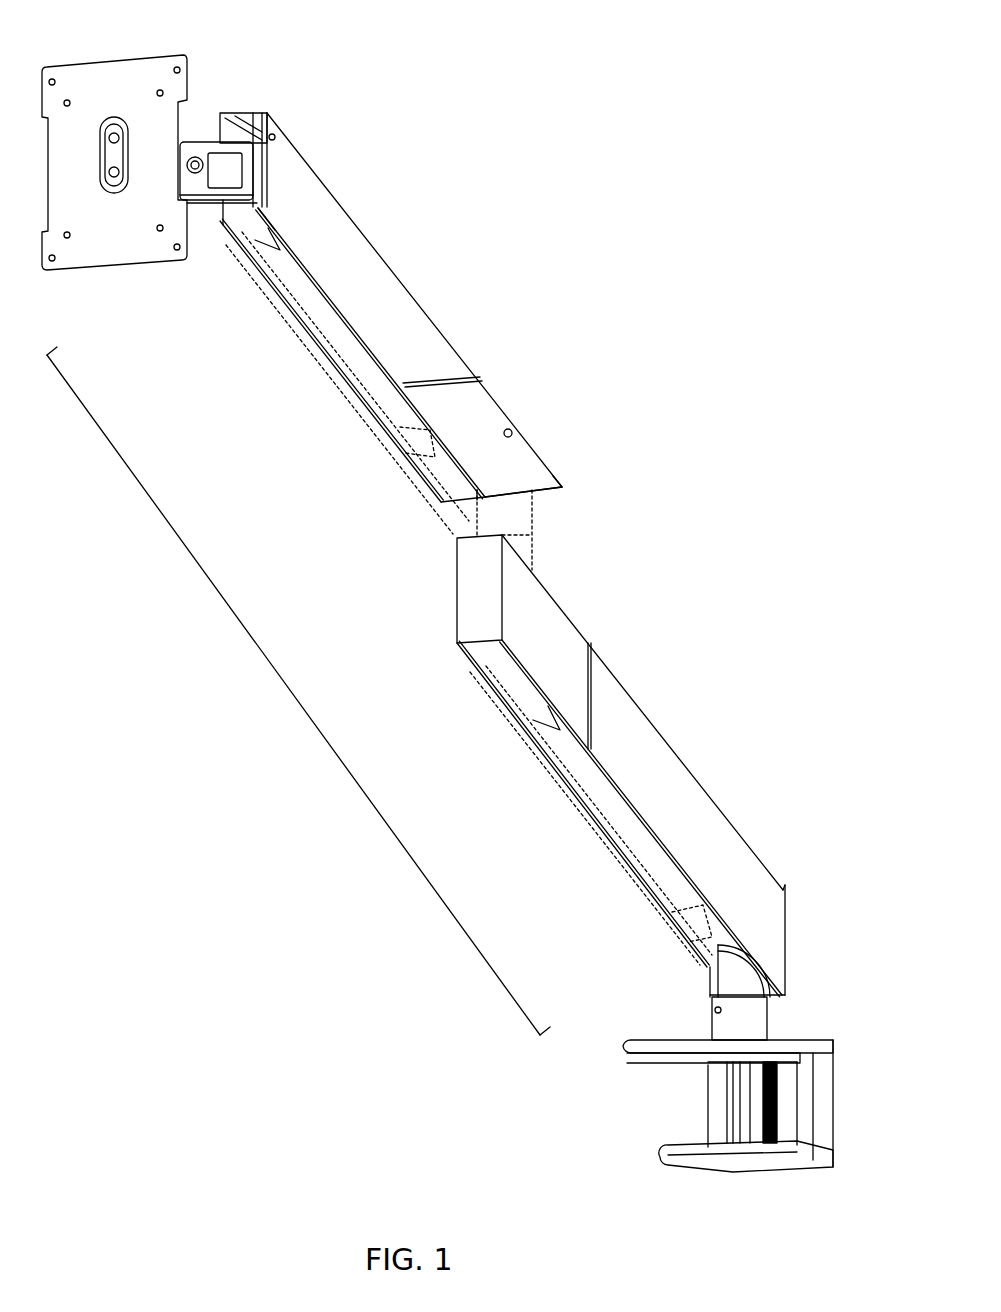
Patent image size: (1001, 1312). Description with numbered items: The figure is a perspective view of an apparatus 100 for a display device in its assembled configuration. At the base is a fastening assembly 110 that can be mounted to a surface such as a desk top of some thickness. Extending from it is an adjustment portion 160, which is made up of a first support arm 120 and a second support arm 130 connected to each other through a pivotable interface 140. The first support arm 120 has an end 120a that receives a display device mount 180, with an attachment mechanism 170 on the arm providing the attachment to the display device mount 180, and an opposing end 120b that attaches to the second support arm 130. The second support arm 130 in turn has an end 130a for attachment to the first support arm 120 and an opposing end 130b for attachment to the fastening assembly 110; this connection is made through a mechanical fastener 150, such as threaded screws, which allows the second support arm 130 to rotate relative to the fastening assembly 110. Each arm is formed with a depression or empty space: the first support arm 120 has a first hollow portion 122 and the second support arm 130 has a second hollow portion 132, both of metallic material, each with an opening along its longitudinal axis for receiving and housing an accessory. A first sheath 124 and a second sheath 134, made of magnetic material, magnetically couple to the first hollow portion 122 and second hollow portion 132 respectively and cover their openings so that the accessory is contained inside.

The apparatus 100 is at (725, 50).
The fastening assembly 110 is at (679, 1107).
The first support arm 120 is at (440, 318).
The end 120a is at (339, 157).
The opposing end 120b is at (573, 450).
The first hollow portion 122 is at (370, 380).
The first sheath 124 is at (327, 360).
The second support arm 130 is at (635, 766).
The end 130a is at (437, 607).
The opposing end 130b is at (804, 926).
The second hollow portion 132 is at (589, 818).
The second sheath 134 is at (583, 804).
The pivotable interface 140 is at (570, 530).
The mechanical fastener 150 is at (807, 1020).
The adjustment portion 160 is at (293, 696).
The attachment mechanism 170 is at (223, 127).
The display device mount 180 is at (112, 137).